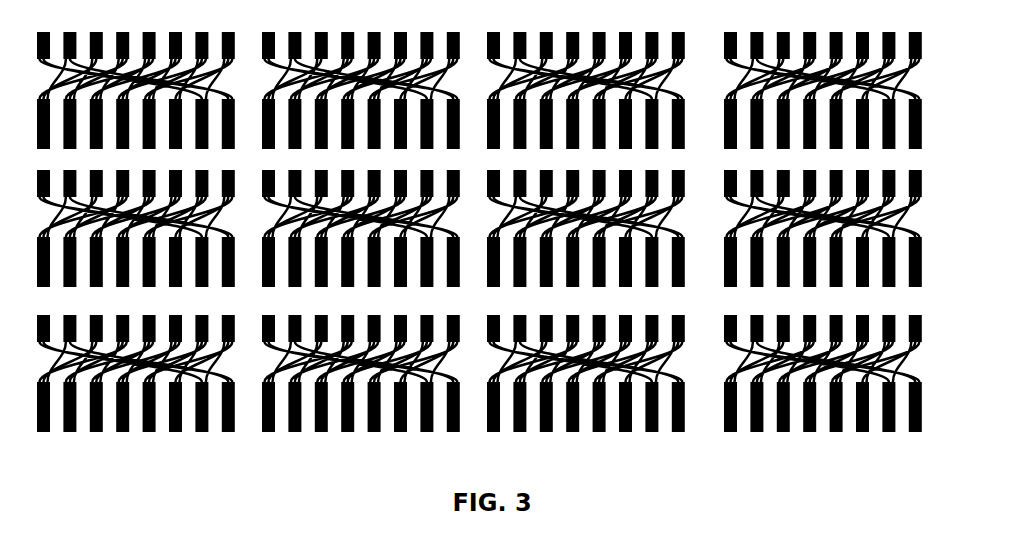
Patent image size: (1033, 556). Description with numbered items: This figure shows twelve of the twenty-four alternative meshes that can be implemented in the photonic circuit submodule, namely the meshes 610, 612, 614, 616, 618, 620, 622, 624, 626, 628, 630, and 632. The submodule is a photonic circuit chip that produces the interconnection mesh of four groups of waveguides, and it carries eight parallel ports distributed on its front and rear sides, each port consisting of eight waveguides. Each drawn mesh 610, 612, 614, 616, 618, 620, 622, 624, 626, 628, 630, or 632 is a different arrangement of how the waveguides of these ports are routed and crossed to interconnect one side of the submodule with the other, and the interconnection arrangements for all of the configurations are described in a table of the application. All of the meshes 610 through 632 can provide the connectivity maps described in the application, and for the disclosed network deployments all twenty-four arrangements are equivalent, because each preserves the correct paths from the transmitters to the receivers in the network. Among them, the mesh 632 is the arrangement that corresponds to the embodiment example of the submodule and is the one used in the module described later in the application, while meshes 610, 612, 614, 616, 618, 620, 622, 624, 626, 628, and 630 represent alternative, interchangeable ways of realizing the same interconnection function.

The mesh 610 is at (136, 99).
The mesh 612 is at (361, 99).
The mesh 614 is at (586, 99).
The mesh 616 is at (823, 99).
The mesh 618 is at (136, 239).
The mesh 620 is at (361, 239).
The mesh 622 is at (586, 239).
The mesh 624 is at (823, 239).
The mesh 626 is at (136, 387).
The mesh 628 is at (361, 387).
The mesh 630 is at (586, 387).
The mesh 632 is at (823, 387).